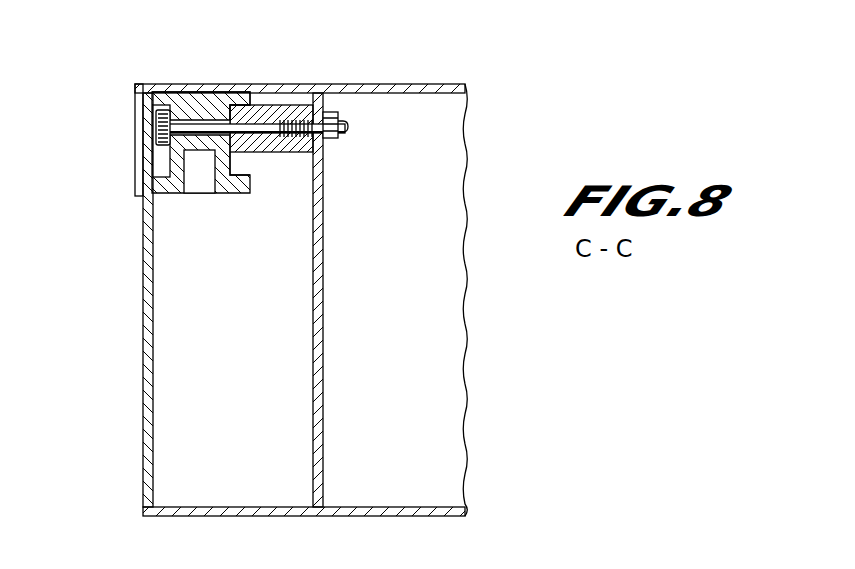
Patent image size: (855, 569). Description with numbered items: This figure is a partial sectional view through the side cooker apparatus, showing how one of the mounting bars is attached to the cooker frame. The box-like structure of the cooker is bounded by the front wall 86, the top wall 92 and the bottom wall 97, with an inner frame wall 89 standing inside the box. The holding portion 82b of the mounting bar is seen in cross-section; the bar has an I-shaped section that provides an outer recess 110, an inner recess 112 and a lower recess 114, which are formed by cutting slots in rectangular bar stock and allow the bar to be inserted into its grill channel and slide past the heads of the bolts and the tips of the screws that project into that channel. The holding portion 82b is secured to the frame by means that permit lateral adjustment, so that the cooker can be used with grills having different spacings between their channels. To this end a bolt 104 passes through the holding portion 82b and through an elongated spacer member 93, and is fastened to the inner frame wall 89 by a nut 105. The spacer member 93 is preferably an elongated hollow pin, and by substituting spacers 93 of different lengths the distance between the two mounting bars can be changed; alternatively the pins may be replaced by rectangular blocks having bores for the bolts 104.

The holding portion 82b is at (228, 90).
The front wall 86 is at (147, 322).
The inner frame wall 89 is at (323, 282).
The top wall 92 is at (400, 83).
The spacer member 93 is at (290, 148).
The bottom wall 97 is at (373, 518).
The bolt 104 is at (345, 127).
The nut 105 is at (333, 139).
The outer recess 110 is at (160, 160).
The inner recess 112 is at (245, 168).
The lower recess 114 is at (203, 190).